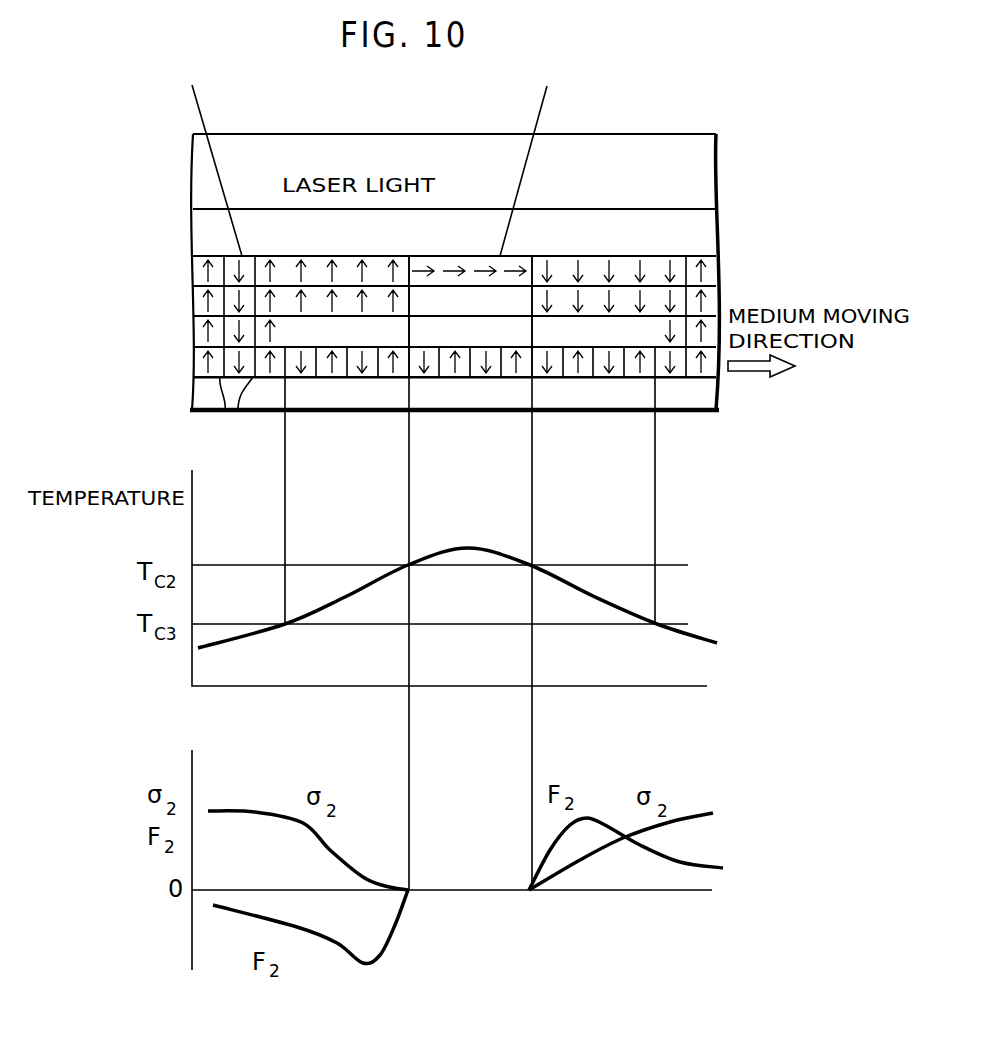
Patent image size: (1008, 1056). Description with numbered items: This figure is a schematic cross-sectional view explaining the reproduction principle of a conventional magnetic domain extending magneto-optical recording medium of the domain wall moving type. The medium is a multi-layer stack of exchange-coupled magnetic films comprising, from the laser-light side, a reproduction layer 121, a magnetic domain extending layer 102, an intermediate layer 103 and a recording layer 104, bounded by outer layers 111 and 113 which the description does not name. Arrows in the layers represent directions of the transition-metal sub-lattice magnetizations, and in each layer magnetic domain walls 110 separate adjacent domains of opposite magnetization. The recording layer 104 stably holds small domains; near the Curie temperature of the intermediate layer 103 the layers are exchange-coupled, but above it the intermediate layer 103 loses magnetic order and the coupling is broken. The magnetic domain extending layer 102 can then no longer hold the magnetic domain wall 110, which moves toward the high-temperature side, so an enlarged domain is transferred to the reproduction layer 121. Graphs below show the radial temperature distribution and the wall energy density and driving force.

The substrate 111 is at (205, 233).
The reproduction layer 121 is at (200, 270).
The magnetic domain extending layer 102 is at (200, 302).
The intermediate layer 103 is at (200, 334).
The recording layer 104 is at (200, 364).
The protective layer 113 is at (200, 391).
The magnetic domain wall 110 is at (236, 413).